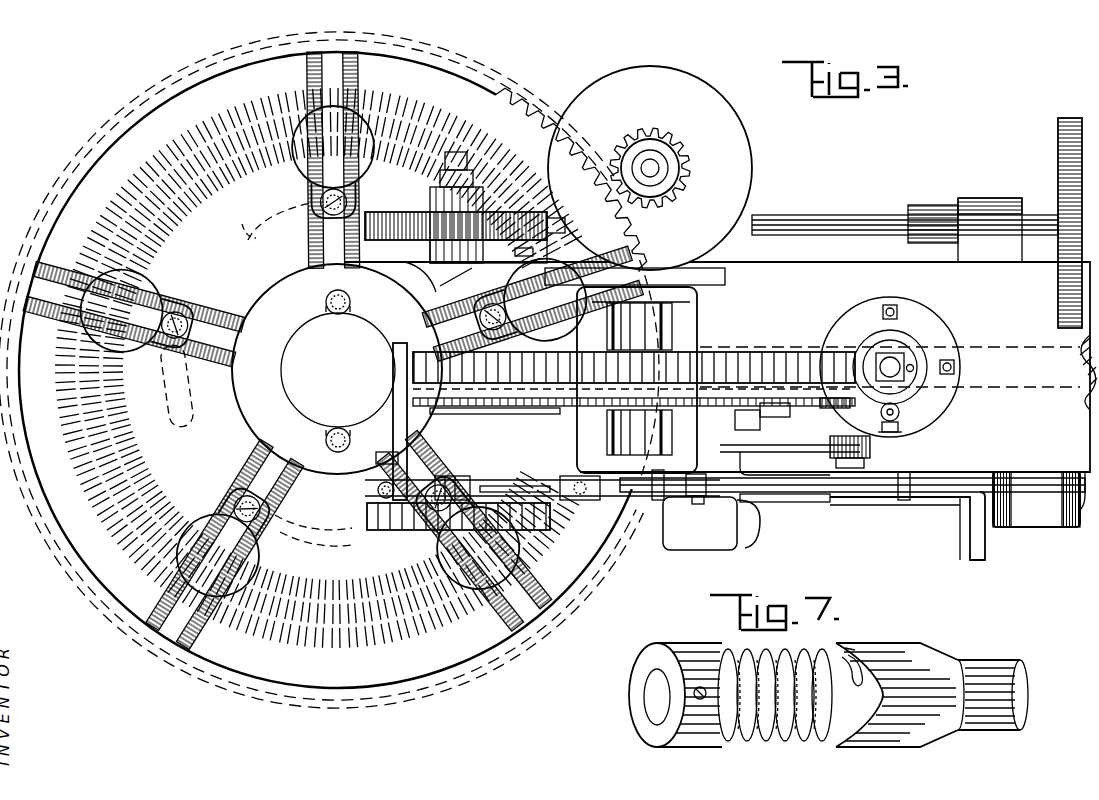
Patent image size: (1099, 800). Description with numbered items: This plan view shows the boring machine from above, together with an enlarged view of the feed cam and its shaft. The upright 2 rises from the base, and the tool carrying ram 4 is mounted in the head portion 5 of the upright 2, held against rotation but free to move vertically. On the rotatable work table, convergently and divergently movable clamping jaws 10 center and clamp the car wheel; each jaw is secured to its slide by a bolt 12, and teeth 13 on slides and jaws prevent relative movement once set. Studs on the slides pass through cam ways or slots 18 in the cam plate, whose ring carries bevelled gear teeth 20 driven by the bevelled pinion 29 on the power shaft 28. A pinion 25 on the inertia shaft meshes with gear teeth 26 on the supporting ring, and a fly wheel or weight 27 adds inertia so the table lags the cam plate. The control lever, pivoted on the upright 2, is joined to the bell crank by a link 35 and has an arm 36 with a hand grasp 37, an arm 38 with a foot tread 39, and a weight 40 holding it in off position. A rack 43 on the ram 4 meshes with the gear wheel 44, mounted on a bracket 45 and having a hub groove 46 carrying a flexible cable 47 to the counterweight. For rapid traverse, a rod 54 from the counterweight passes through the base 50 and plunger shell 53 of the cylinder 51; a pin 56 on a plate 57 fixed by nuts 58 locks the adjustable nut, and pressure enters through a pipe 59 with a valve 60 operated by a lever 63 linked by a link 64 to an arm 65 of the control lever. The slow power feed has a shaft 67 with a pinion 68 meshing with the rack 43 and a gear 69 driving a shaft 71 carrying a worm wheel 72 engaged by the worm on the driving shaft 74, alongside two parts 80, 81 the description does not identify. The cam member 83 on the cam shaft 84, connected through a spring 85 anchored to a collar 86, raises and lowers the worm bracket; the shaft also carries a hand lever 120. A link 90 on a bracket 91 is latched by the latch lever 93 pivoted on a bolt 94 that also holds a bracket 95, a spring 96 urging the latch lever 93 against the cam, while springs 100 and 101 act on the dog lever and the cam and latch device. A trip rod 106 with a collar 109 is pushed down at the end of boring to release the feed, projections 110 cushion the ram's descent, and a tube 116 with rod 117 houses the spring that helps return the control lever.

In FIG. 3, the upright 2 is at (770, 275).
In FIG. 3, the tool carrying ram 4 is at (300, 395).
In FIG. 3, the head portion 5 is at (238, 420).
In FIG. 3, the clamping jaws 10 is at (300, 160).
In FIG. 3, the bolt 12 is at (330, 205).
In FIG. 3, the teeth 13 is at (312, 75).
In FIG. 3, the cam ways or slots 18 is at (250, 230).
In FIG. 3, the bevelled gear teeth 20 is at (134, 450).
In FIG. 3, the pinion 25 is at (660, 138).
In FIG. 3, the gear teeth 26 is at (520, 96).
In FIG. 3, the fly wheel or weight 27 is at (685, 80).
In FIG. 3, the power shaft 28 is at (1080, 402).
In FIG. 3, the bevelled pinion 29 is at (725, 290).
In FIG. 3, the link 35 is at (1088, 492).
In FIG. 3, the arm 36 is at (938, 500).
In FIG. 3, the hand grasp 37 is at (1052, 542).
In FIG. 3, the arm 38 is at (760, 540).
In FIG. 3, the foot tread 39 is at (702, 540).
In FIG. 3, the weight 40 is at (1030, 518).
In FIG. 3, the rack 43 is at (393, 352).
In FIG. 3, the gear wheel 44 is at (770, 360).
In FIG. 3, the bracket 45 is at (700, 315).
In FIG. 3, the groove 46 is at (548, 414).
In FIG. 3, the flexible cable 47 is at (850, 405).
In FIG. 3, the base 50 is at (942, 407).
In FIG. 3, the cylinder 51 is at (930, 400).
In FIG. 3, the plunger shell 53 is at (856, 340).
In FIG. 3, the rod 54 is at (903, 372).
In FIG. 3, the pin 56 is at (932, 372).
In FIG. 3, the plate 57 is at (896, 364).
In FIG. 3, the nuts 58 is at (918, 365).
In FIG. 3, the pipe 59 is at (902, 412).
In FIG. 3, the valve 60 is at (905, 424).
In FIG. 3, the lever 63 is at (858, 446).
In FIG. 3, the link 64 is at (830, 450).
In FIG. 3, the arm 65 is at (805, 502).
In FIG. 3, the shaft 67 is at (420, 275).
In FIG. 3, the pinion 68 is at (440, 285).
In FIG. 3, the gear 69 is at (412, 530).
In FIG. 3, the shaft 71 is at (456, 170).
In FIG. 3, the worm wheel 72 is at (432, 212).
In FIG. 3, the driving shaft 74 is at (815, 225).
In FIG. 3, the collar 80 is at (935, 210).
In FIG. 3, the gear 81 is at (1066, 122).
In FIG. 7, the cam member 83 is at (880, 655).
In FIG. 7, the cam shaft 84 is at (980, 668).
In FIG. 7, the spring 85 is at (732, 655).
In FIG. 7, the collar 86 is at (662, 655).
In FIG. 3, the link 90 is at (906, 492).
In FIG. 3, the bracket 91 is at (900, 482).
In FIG. 3, the latch lever 93 is at (660, 492).
In FIG. 3, the bolt 94 is at (705, 503).
In FIG. 3, the bracket 95 is at (692, 500).
In FIG. 3, the spring 96 is at (560, 485).
In FIG. 3, the spring 100 is at (620, 482).
In FIG. 3, the spring 101 is at (468, 482).
In FIG. 3, the trip rod 106 is at (372, 492).
In FIG. 3, the collar 109 is at (378, 460).
In FIG. 3, the projections 110 is at (326, 302).
In FIG. 3, the tube 116 is at (735, 360).
In FIG. 3, the rod 117 is at (790, 415).
In FIG. 3, the hand lever 120 is at (575, 515).